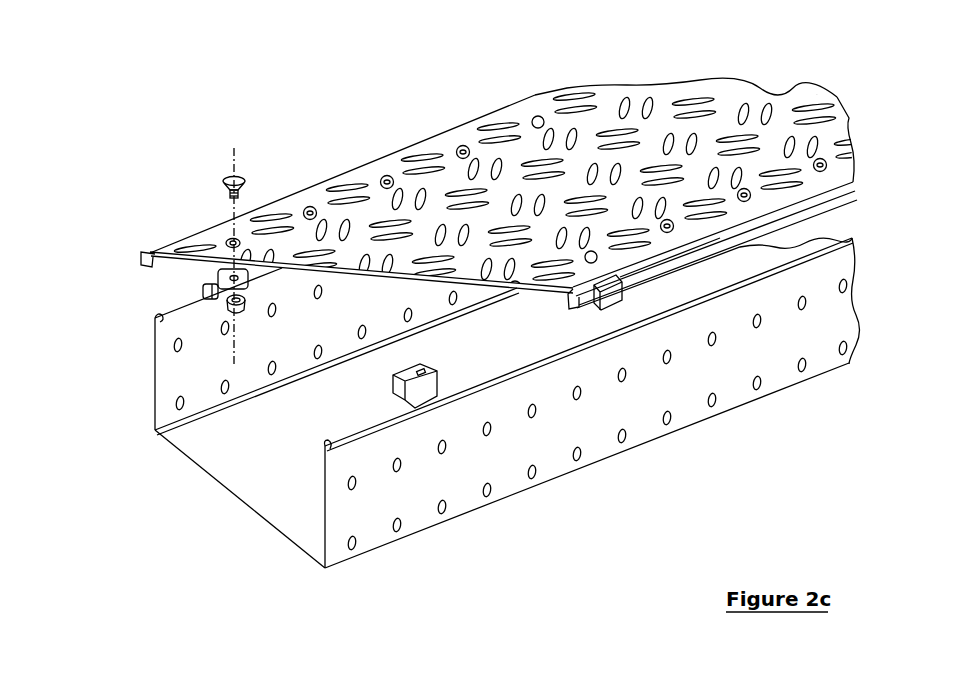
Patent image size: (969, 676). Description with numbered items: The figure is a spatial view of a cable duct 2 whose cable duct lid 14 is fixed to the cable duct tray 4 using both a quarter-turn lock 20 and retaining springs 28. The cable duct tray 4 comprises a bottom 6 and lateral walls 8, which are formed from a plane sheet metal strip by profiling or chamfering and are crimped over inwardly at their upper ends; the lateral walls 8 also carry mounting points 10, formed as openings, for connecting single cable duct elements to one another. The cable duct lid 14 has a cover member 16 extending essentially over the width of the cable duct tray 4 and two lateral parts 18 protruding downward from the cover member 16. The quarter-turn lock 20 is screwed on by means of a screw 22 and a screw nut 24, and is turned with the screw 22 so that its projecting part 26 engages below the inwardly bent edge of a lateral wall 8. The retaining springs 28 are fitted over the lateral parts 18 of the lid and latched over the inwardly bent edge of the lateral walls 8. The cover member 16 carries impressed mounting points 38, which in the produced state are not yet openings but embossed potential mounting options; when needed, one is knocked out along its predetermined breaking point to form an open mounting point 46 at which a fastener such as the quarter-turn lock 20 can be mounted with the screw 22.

The cable duct 2 is at (557, 524).
The cable duct tray 4 is at (313, 514).
The bottom 6 is at (250, 456).
The lateral walls 8 is at (205, 365).
The mounting points 10 is at (847, 356).
The cable duct lid 14 is at (441, 98).
The cover member 16 is at (605, 105).
The lateral parts 18 is at (150, 258).
The quarter-turn locks 20 is at (228, 298).
The screw 22 is at (224, 181).
The screw nut 24 is at (250, 272).
The projecting part 26 is at (212, 298).
The retaining springs 28 is at (423, 395).
The impressed mounting points 38 is at (457, 152).
The open mounting point 46 is at (230, 240).